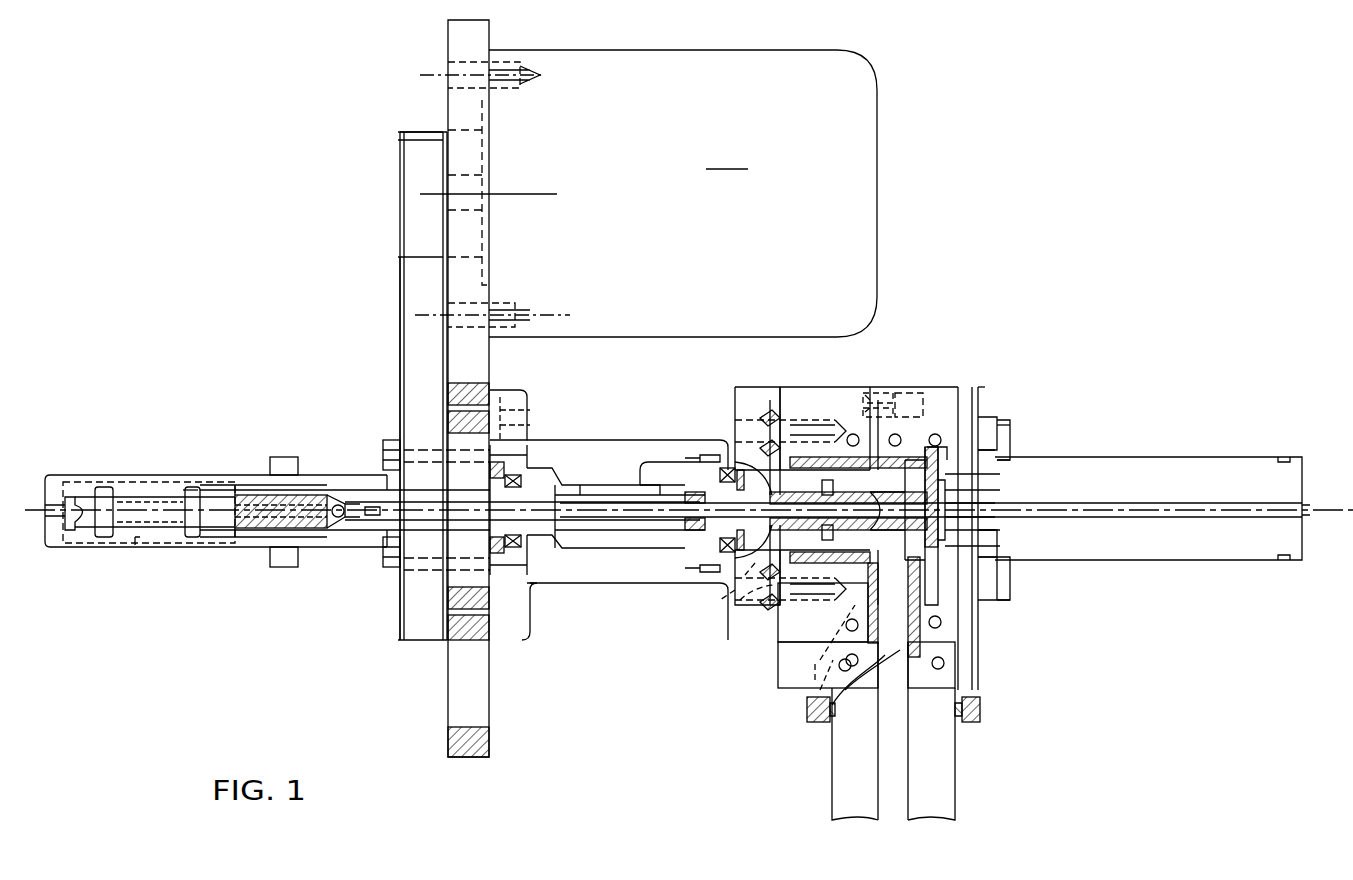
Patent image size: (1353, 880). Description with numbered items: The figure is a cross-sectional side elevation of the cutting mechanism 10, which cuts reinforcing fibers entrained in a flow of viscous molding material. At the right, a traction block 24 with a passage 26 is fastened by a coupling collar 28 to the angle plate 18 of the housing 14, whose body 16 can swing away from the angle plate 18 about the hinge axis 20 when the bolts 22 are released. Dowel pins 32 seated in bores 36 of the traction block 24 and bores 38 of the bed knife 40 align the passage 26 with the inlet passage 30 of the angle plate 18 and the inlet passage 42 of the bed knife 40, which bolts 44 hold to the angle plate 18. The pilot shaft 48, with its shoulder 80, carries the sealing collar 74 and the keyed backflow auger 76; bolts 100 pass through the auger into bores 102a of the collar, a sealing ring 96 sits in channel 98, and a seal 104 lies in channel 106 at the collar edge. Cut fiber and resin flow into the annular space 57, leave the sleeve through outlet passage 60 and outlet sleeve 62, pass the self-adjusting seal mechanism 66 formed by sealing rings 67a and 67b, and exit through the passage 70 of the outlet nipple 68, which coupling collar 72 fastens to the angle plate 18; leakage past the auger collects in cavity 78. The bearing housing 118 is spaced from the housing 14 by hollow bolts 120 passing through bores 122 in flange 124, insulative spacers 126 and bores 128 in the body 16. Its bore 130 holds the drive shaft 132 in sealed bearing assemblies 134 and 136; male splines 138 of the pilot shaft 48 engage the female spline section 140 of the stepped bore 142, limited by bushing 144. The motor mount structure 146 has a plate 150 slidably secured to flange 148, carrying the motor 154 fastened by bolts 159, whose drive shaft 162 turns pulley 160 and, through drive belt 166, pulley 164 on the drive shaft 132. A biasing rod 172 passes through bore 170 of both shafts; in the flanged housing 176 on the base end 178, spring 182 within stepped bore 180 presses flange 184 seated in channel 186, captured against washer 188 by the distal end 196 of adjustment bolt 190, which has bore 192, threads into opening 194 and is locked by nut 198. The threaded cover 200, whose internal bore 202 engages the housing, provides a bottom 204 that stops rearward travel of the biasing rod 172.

The cutting mechanism 10 is at (1075, 378).
The housing 14 is at (985, 628).
The body 16 is at (778, 640).
The angle plate 18 is at (778, 685).
The hinge axis 20 is at (962, 385).
The bolts 22 is at (908, 395).
The traction block 24 is at (1253, 457).
The passage 26 is at (1305, 512).
The coupling collar 28 is at (1005, 420).
The inlet passage 30 is at (1010, 565).
The dowel pins 32 is at (1000, 478).
The bores 36 is at (1000, 447).
The bores 38 is at (1000, 487).
The bed knife 40 is at (1000, 428).
The inlet passage 42 is at (1005, 512).
The bolts 44 is at (948, 440).
The pilot shaft 48 is at (780, 470).
The annular space 57 is at (905, 470).
The outlet passage 60 is at (810, 688).
The outlet sleeve 62 is at (922, 648).
The self-adjusting seal mechanism 66 is at (935, 635).
The sealing ring 67a is at (832, 705).
The sealing ring 67b is at (845, 690).
The outlet nipple 68 is at (955, 802).
The passage 70 is at (908, 770).
The coupling collar 72 is at (982, 705).
The sealing collar 74 is at (912, 470).
The backflow auger 76 is at (858, 470).
The cavity 78 is at (815, 470).
The shoulder 80 is at (758, 470).
The sealing ring 96 is at (880, 540).
The channel 98 is at (928, 470).
The bolts 100 is at (820, 615).
The bores 102a is at (862, 420).
The seal 104 is at (960, 455).
The channel 106 is at (1000, 603).
The bearing housing 118 is at (582, 588).
The bolts 120 is at (740, 425).
The bores 122 is at (718, 605).
The flange 124 is at (745, 620).
The spacers 126 is at (768, 415).
The bores 128 is at (778, 665).
The bore 130 is at (610, 548).
The drive shaft 132 is at (560, 545).
The bearing assembly 134 is at (712, 540).
The bearing assembly 136 is at (527, 450).
The male splines 138 is at (647, 470).
The female spline section 140 is at (715, 458).
The stepped bore 142 is at (590, 488).
The bushing 144 is at (700, 548).
The motor mount structure 146 is at (338, 224).
The flange 148 is at (530, 635).
The plate 150 is at (492, 708).
The motor 154 is at (683, 193).
The bolts 159 is at (450, 70).
The pulley 160 is at (400, 135).
The drive shaft 162 is at (400, 162).
The pulley 164 is at (405, 393).
The drive belt 166 is at (402, 268).
The bore 170 is at (547, 498).
The biasing rod 172 is at (580, 510).
The flanged housing 176 is at (327, 545).
The base end 178 is at (350, 495).
The stepped bore 180 is at (316, 490).
The spring 182 is at (256, 505).
The flange 184 is at (335, 495).
The channel 186 is at (340, 525).
The washer 188 is at (238, 528).
The adjustment bolt 190 is at (103, 487).
The bore 192 is at (150, 505).
The threaded opening 194 is at (212, 490).
The distal end 196 is at (243, 498).
The locking nut 198 is at (187, 486).
The threaded cover 200 is at (193, 550).
The internal bore 202 is at (137, 560).
The bottom 204 is at (68, 472).